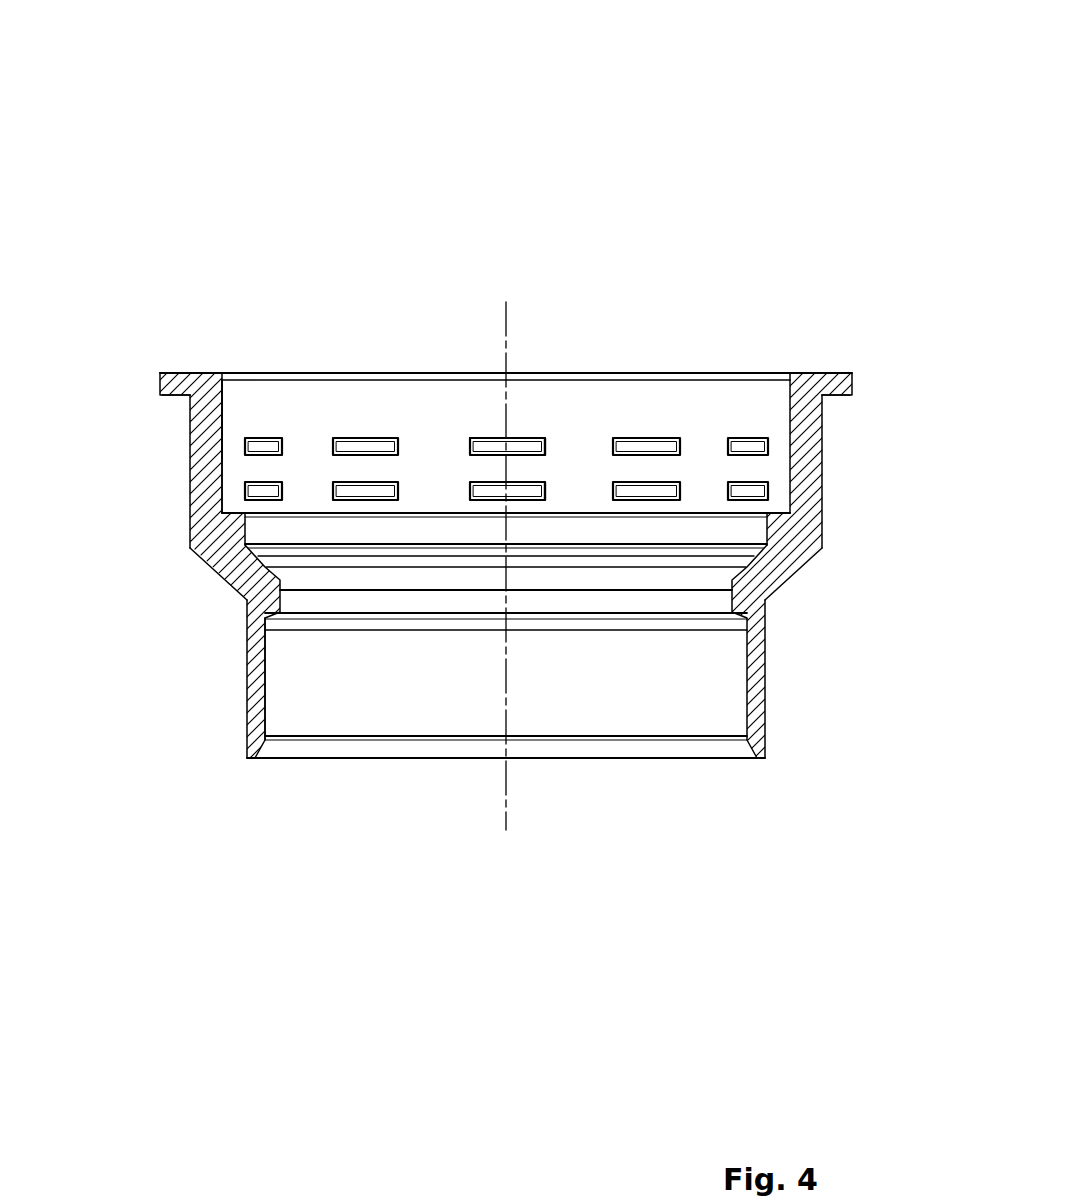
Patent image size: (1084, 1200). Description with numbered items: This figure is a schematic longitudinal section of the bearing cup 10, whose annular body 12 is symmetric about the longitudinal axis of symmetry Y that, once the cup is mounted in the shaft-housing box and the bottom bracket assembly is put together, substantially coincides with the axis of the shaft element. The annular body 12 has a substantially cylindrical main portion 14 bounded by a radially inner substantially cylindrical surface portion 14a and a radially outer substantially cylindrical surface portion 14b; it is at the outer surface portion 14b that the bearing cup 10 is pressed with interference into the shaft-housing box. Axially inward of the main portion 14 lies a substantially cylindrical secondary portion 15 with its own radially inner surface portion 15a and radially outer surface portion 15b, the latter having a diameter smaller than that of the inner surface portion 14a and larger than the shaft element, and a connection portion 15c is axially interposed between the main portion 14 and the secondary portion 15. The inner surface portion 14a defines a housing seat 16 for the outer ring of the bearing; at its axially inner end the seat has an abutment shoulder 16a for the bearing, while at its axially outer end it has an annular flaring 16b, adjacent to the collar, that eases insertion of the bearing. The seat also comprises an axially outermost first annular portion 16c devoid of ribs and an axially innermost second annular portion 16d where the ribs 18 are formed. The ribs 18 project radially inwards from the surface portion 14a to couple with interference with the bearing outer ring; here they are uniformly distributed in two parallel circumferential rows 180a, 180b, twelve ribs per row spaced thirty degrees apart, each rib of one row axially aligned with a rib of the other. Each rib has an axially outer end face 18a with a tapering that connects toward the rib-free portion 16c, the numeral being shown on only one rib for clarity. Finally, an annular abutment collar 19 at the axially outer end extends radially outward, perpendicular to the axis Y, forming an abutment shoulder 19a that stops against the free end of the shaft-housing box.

The bearing cup 10 is at (246, 119).
The annular body 12 is at (181, 608).
The substantially cylindrical main portion 14 is at (171, 422).
The radially inner substantially cylindrical surface portion 14a is at (790, 403).
The radially outer substantially cylindrical surface portion 14b is at (190, 497).
The substantially cylindrical secondary portion 15 is at (768, 722).
The radially inner substantially cylindrical surface portion 15a is at (278, 692).
The radially outer substantially cylindrical surface portion 15b is at (246, 727).
The connection portion 15c is at (794, 584).
The housing seat 16 is at (705, 452).
The abutment shoulder 16a is at (248, 440).
The annular flaring 16b is at (227, 440).
The axially outermost first annular portion 16c is at (389, 403).
The axially innermost second annular portion 16d is at (418, 442).
The ribs 18 is at (232, 490).
The axially outer end face 18a is at (517, 432).
The circumferential row 180a is at (555, 428).
The circumferential row 180b is at (557, 483).
The annular abutment collar 19 is at (825, 366).
The abutment shoulder 19a is at (833, 400).
The longitudinal axis of symmetry Y is at (500, 803).